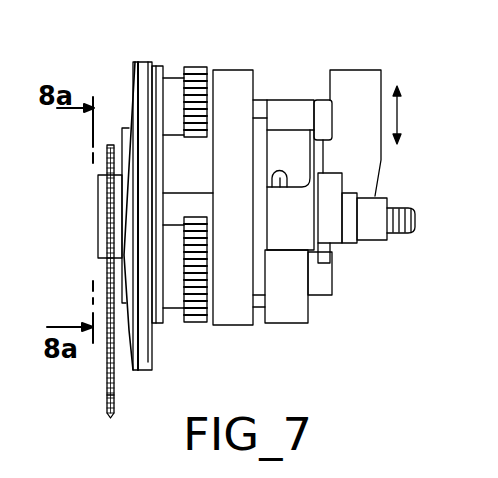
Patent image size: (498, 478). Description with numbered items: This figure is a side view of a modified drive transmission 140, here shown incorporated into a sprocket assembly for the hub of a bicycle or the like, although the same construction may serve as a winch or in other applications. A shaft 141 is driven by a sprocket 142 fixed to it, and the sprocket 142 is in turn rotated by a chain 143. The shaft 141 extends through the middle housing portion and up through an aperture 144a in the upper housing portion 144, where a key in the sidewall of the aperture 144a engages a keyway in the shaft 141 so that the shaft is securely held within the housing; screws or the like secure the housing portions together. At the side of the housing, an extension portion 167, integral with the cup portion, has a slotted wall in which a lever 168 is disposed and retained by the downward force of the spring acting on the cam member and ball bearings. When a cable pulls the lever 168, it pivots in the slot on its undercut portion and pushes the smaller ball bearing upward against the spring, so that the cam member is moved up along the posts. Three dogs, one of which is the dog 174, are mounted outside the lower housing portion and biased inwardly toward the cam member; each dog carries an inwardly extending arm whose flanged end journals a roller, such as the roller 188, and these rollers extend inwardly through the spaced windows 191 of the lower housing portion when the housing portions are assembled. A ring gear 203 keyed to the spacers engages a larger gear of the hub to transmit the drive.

The drive transmission 140 is at (363, 68).
The shaft 141 is at (97, 217).
The sprocket 142 is at (108, 143).
The chain 143 is at (103, 390).
The upper housing portion 144 is at (152, 62).
The aperture 144a is at (237, 76).
The extension portion 167 is at (368, 235).
The lever 168 is at (372, 88).
The dog 174 is at (282, 225).
The roller 188 is at (282, 168).
The windows 191 is at (297, 153).
The gear 203 is at (197, 68).